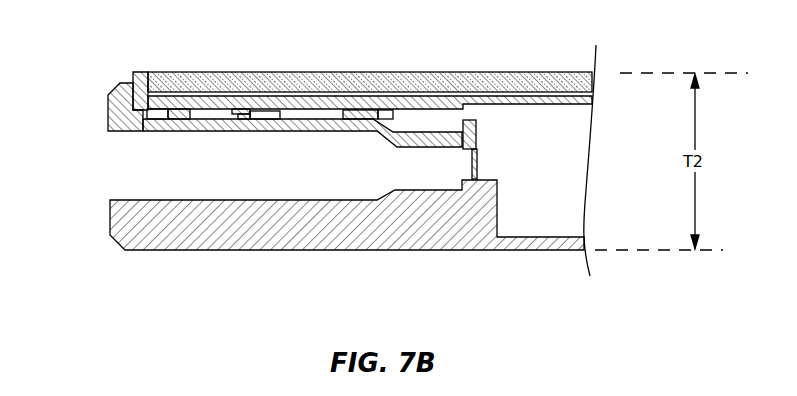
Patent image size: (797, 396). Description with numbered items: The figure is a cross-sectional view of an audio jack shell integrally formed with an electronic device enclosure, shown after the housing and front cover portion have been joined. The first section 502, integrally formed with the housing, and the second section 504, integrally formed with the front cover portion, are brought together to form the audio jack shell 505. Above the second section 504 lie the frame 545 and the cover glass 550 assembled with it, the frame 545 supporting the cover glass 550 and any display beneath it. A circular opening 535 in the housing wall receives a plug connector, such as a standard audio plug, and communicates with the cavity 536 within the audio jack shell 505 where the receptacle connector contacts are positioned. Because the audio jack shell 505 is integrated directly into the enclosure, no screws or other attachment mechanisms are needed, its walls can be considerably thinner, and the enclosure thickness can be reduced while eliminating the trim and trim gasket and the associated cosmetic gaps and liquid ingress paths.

The frame 545 is at (143, 73).
The cover glass 550 is at (232, 84).
The second section 504 is at (333, 115).
The audio jack shell 505 is at (482, 133).
The circular opening 535 is at (160, 162).
The cavity 536 is at (308, 175).
The first section 502 is at (257, 216).